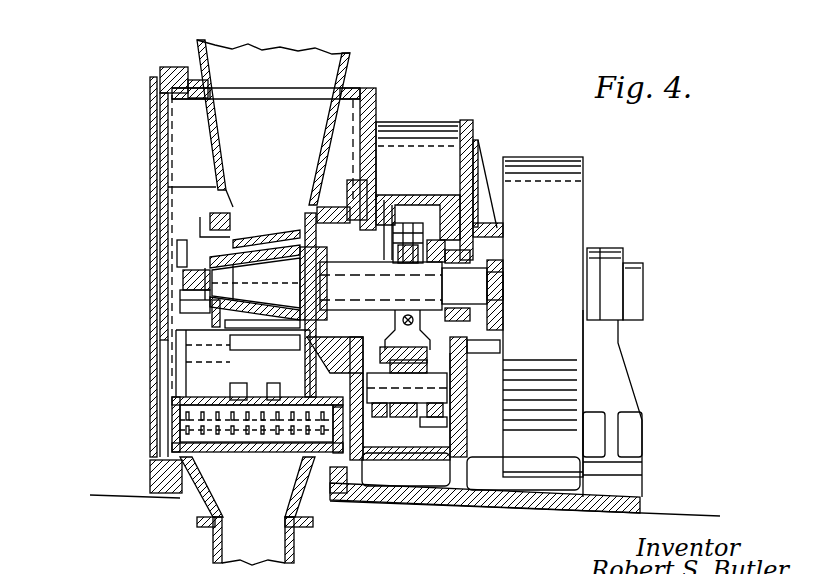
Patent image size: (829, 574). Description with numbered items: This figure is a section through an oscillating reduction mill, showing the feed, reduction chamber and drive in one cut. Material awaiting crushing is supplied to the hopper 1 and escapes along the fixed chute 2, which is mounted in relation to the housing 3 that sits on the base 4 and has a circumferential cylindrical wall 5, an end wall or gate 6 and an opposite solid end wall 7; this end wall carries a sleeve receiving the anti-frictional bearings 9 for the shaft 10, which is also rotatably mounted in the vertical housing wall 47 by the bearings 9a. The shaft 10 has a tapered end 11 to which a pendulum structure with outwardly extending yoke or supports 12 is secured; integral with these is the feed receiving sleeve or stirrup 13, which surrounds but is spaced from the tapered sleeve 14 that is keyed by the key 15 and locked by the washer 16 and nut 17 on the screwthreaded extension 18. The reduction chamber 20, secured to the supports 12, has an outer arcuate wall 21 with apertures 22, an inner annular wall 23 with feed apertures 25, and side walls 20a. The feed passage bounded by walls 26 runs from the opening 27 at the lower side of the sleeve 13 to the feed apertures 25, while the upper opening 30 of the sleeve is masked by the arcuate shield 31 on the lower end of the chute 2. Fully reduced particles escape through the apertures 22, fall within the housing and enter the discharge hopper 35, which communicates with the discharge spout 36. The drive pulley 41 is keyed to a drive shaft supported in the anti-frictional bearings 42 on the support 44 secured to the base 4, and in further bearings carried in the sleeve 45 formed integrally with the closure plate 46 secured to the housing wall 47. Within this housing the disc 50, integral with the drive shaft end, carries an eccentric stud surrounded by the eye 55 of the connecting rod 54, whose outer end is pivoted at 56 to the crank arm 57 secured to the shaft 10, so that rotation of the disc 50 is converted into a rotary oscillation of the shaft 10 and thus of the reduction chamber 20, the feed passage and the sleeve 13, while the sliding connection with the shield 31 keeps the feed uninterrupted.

The hopper 1 is at (340, 62).
The fixed chute 2 is at (222, 136).
The housing 3 is at (176, 66).
The base 4 is at (383, 5).
The circumferential cylindrical wall 5 is at (190, 76).
The end wall or gate 6 is at (156, 195).
The solid end wall 7 is at (366, 116).
The anti-frictional bearings 9 is at (341, 198).
The bearings 9a is at (500, 262).
The shaft 10 is at (372, 270).
The tapered end 11 is at (237, 300).
The yoke or supports 12 is at (232, 374).
The feed receiving sleeve or stirrup 13 is at (223, 331).
The tapered sleeve 14 is at (251, 301).
The key 15 is at (274, 248).
The washer 16 is at (215, 285).
The nut 17 is at (205, 300).
The screwthreaded extension 18 is at (186, 279).
The reduction chamber 20 is at (180, 262).
The side walls 20a is at (190, 432).
The outer arcuate wall 21 is at (177, 450).
The apertures 22 is at (231, 452).
The inner annular wall 23 is at (237, 398).
The feed apertures 25 is at (231, 382).
The feed passage walls 26 is at (231, 361).
The opening 27 is at (264, 323).
The opening 30 is at (249, 240).
The arcuate shield 31 is at (197, 226).
The discharge hopper 35 is at (205, 505).
The discharge spout 36 is at (228, 543).
The drive pulley 41 is at (577, 192).
The anti-frictional bearings 42 is at (603, 258).
The support 44 is at (615, 372).
The sleeve 45 is at (481, 225).
The closure plate 46 is at (501, 228).
The vertical housing wall 47 is at (466, 139).
The disc 50 is at (437, 438).
The connecting rod 54 is at (392, 430).
The eye 55 is at (397, 236).
The pivot 56 is at (410, 442).
The crank arm 57 is at (431, 250).